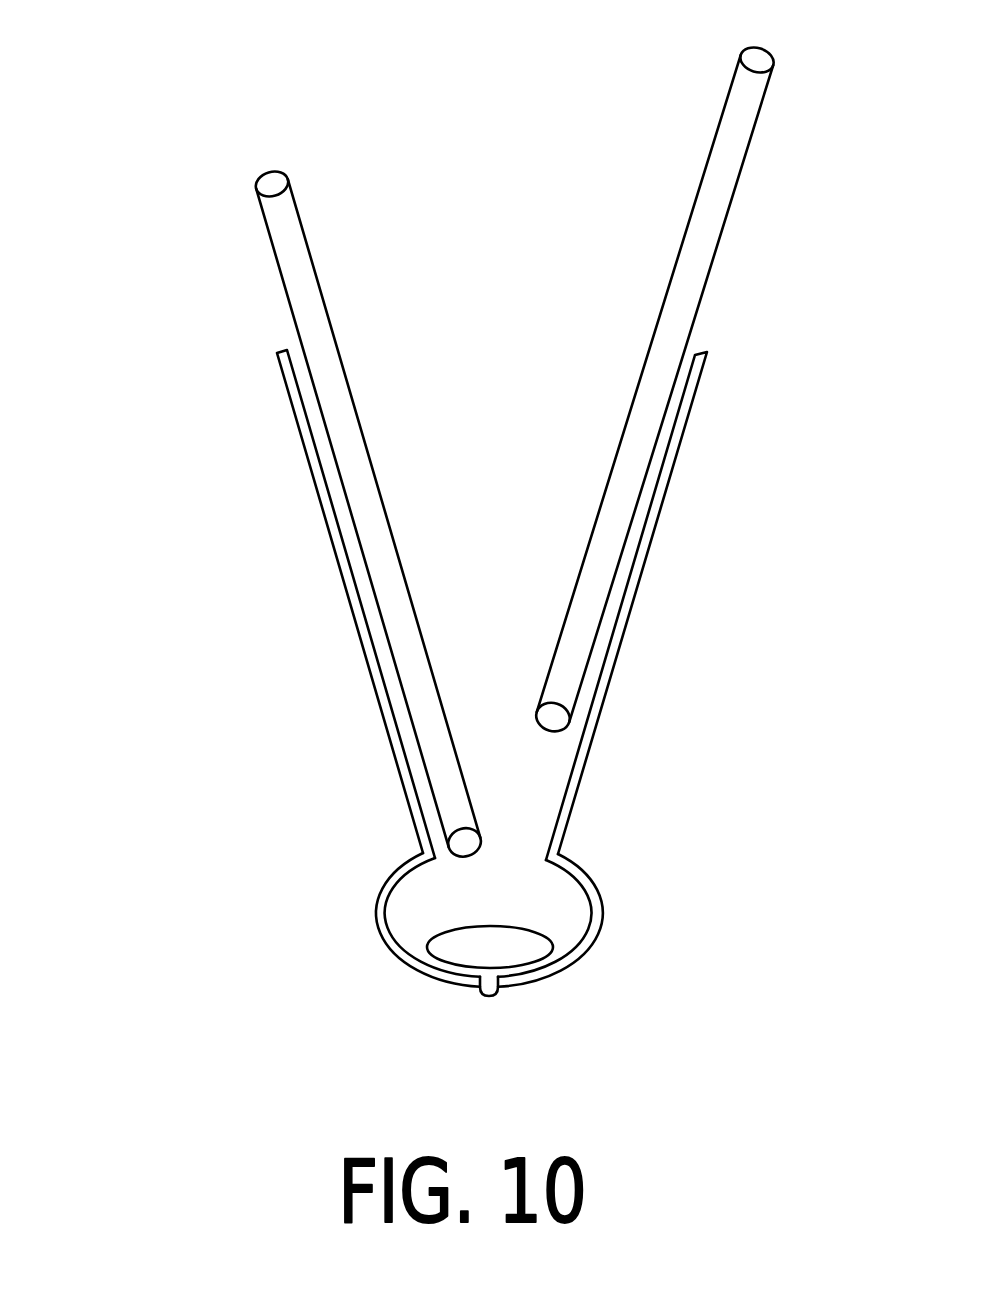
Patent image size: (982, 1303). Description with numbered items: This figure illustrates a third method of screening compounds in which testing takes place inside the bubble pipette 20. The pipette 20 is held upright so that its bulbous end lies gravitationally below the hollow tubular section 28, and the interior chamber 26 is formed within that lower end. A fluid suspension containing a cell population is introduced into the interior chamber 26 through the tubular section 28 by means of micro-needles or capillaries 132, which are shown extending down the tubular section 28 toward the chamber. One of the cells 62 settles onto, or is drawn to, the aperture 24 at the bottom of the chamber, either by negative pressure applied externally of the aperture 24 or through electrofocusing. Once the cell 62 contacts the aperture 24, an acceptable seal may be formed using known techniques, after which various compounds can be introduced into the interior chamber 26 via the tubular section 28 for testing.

The micro-needles or capillaries 132 is at (288, 252).
The bubble pipette 20 is at (300, 547).
The tubular section 28 is at (633, 603).
The interior chamber 26 is at (518, 910).
The cell 62 is at (425, 945).
The aperture 24 is at (503, 987).